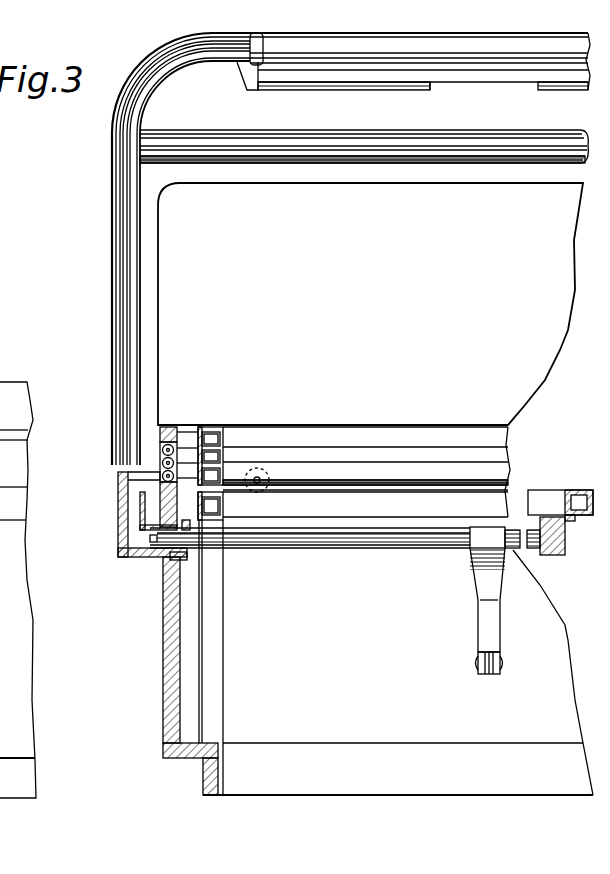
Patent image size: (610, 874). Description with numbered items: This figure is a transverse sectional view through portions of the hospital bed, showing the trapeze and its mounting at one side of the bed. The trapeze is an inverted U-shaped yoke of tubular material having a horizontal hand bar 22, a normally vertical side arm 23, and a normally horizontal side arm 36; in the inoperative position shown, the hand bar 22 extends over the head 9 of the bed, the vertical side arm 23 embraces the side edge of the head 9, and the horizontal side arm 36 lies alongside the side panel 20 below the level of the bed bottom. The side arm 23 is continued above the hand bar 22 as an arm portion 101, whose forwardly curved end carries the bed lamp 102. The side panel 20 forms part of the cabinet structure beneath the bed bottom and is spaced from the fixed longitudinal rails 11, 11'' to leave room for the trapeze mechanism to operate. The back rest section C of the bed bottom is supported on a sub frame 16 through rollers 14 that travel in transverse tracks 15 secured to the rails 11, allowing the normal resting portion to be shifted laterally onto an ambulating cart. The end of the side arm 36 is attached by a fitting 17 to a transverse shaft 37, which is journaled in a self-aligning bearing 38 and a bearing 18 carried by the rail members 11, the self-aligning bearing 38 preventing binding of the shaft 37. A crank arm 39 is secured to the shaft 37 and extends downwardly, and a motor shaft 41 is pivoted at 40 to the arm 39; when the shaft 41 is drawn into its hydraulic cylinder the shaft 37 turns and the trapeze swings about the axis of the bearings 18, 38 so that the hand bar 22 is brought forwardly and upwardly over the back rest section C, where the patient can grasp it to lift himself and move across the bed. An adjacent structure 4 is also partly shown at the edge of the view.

The adjacent structure 4 is at (18, 575).
The head 9 is at (436, 229).
The longitudinal rail 11 is at (229, 611).
The longitudinal rail 11'' is at (560, 489).
The roller 14 is at (270, 478).
The transverse track 15 is at (354, 490).
The sub frame 16 is at (508, 475).
The fitting 17 is at (118, 542).
The bearing 18 is at (163, 562).
The side panel 20 is at (163, 669).
The hand bar 22 is at (490, 128).
The vertical side arm 23 is at (112, 258).
The horizontal side arm 36 is at (118, 480).
The transverse shaft 37 is at (362, 549).
The self-aligning bearing 38 is at (557, 556).
The crank arm 39 is at (478, 621).
The pivot 40 is at (476, 667).
The shaft 41 is at (489, 676).
The arm portion 101 is at (167, 83).
The bed lamp 102 is at (311, 100).
The back rest section C is at (365, 426).